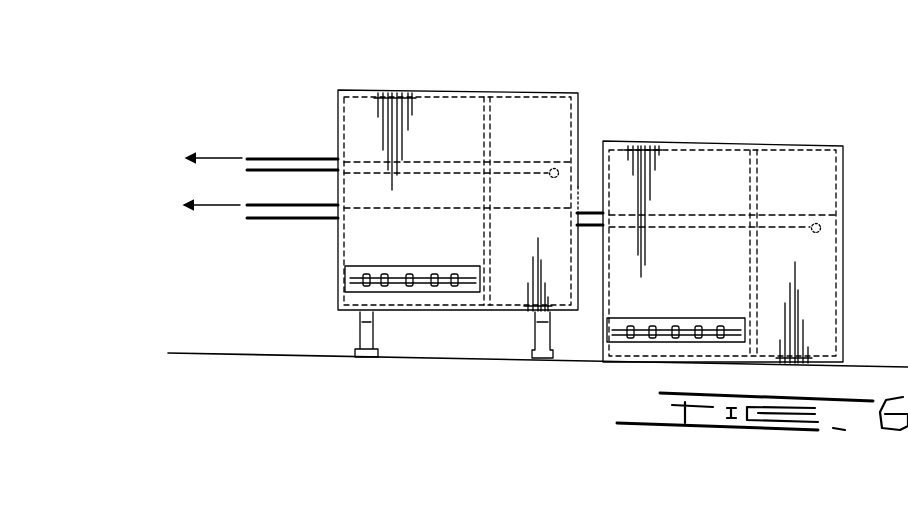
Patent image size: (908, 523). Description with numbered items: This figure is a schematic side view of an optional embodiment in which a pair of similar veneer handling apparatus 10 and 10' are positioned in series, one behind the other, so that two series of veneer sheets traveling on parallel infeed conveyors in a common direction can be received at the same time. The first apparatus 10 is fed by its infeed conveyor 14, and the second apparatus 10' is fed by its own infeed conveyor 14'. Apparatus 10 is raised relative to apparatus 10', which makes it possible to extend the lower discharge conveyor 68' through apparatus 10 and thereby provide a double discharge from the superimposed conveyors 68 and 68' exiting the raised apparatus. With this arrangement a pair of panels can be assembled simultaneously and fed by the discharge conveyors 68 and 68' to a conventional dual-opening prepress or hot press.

The apparatus 10 is at (458, 185).
The second apparatus 10' is at (723, 218).
The infeed conveyor 14 is at (412, 331).
The infeed conveyor of second apparatus 14' is at (671, 357).
The discharge conveyor 68 is at (266, 132).
The second discharge conveyor 68' is at (265, 234).